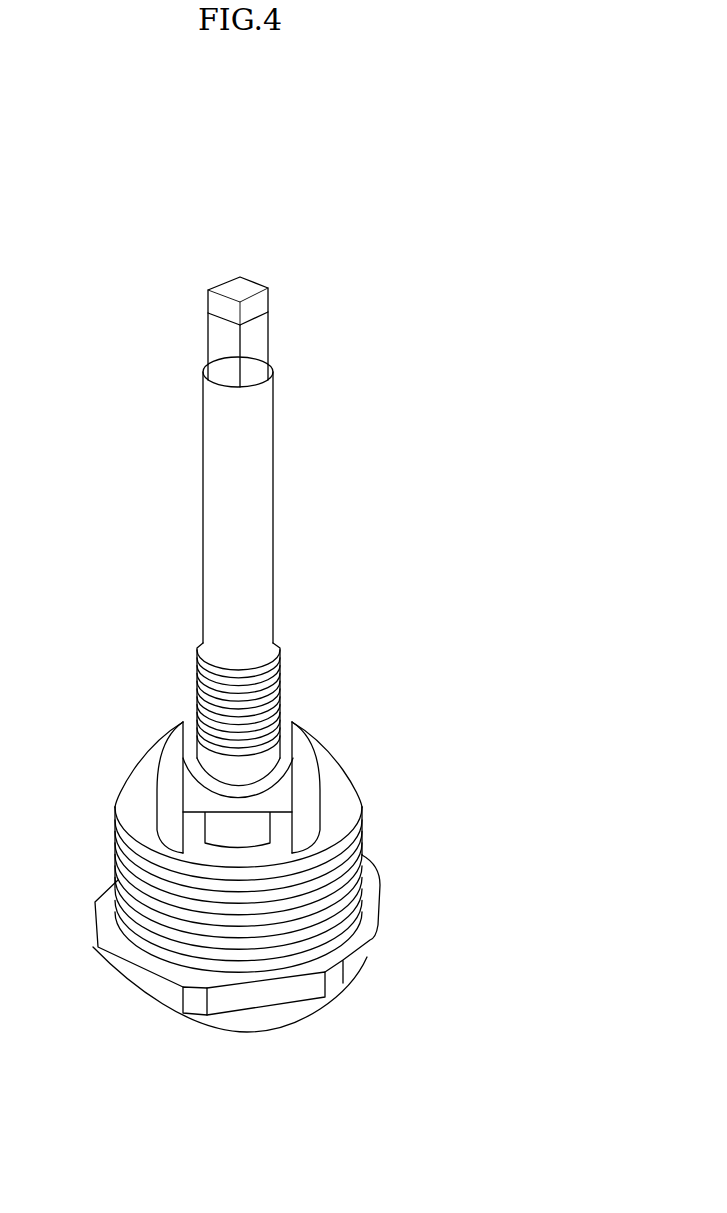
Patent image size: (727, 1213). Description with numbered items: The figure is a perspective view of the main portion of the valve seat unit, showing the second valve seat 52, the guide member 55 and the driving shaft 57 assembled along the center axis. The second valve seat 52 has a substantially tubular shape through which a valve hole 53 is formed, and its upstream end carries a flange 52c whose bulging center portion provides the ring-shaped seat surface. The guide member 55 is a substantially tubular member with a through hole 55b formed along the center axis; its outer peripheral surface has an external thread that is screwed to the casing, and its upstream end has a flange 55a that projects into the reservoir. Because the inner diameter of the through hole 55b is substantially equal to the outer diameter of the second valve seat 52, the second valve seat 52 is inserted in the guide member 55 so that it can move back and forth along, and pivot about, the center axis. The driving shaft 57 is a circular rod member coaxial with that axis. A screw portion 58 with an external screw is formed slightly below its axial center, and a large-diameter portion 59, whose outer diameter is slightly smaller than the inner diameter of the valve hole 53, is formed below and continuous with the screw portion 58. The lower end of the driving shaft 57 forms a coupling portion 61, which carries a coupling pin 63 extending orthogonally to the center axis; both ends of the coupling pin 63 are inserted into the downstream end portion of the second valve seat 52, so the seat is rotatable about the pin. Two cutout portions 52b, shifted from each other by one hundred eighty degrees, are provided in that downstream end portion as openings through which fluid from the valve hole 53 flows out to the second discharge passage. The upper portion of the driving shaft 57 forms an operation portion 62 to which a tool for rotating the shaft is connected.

The second valve seat 52 is at (305, 830).
The cutout portions 52b is at (185, 726).
The flange 52c is at (302, 1012).
The valve hole 53 is at (262, 830).
The guide member 55 is at (245, 965).
The flange 55a is at (232, 1002).
The through hole 55b is at (236, 862).
The driving shaft 57 is at (278, 423).
The screw portion 58 is at (282, 694).
The large-diameter portion 59 is at (328, 758).
The coupling portion 61 is at (258, 826).
The operation portion 62 is at (253, 346).
The coupling pin 63 is at (188, 807).